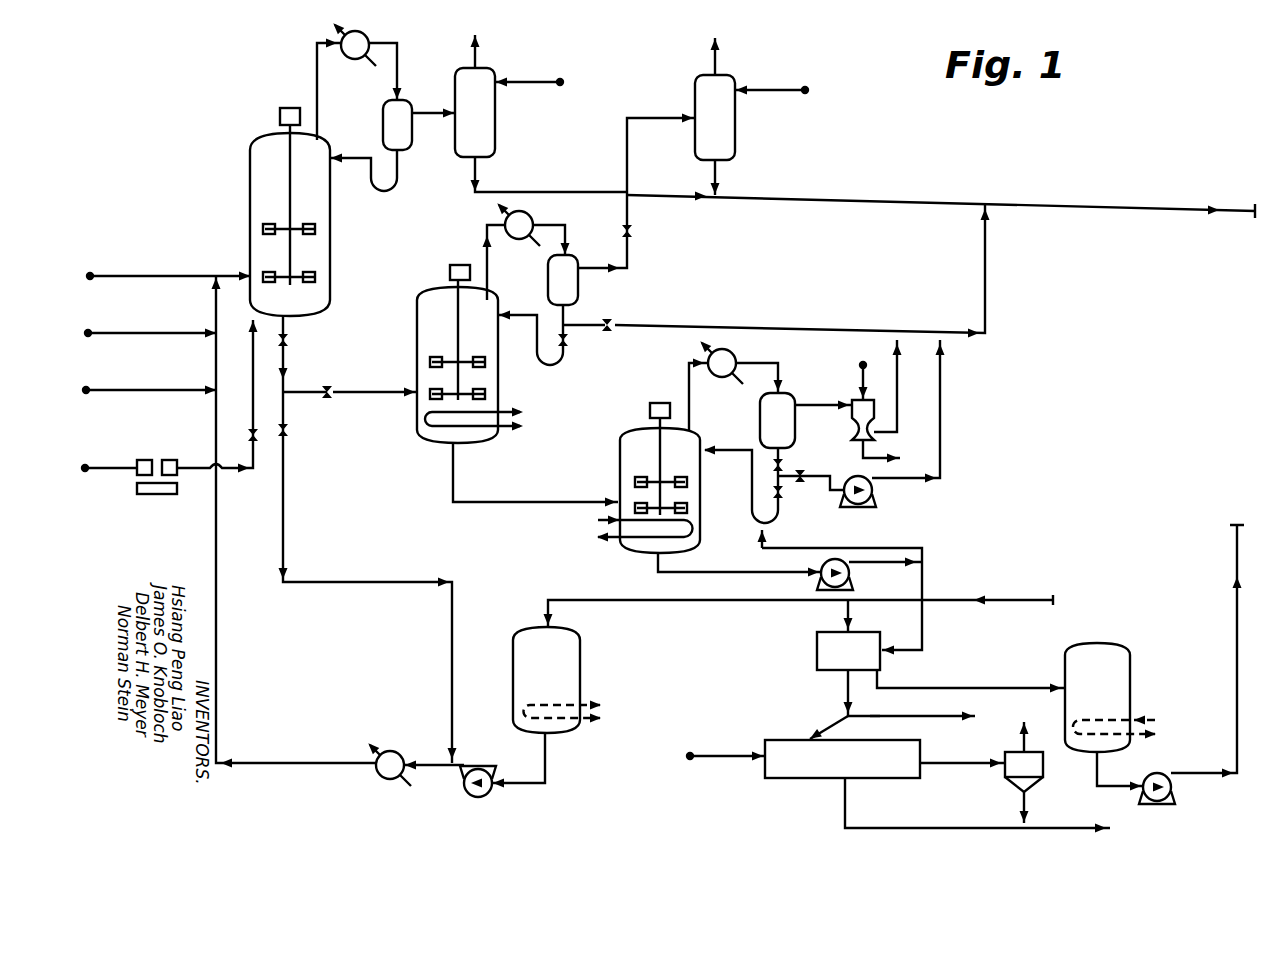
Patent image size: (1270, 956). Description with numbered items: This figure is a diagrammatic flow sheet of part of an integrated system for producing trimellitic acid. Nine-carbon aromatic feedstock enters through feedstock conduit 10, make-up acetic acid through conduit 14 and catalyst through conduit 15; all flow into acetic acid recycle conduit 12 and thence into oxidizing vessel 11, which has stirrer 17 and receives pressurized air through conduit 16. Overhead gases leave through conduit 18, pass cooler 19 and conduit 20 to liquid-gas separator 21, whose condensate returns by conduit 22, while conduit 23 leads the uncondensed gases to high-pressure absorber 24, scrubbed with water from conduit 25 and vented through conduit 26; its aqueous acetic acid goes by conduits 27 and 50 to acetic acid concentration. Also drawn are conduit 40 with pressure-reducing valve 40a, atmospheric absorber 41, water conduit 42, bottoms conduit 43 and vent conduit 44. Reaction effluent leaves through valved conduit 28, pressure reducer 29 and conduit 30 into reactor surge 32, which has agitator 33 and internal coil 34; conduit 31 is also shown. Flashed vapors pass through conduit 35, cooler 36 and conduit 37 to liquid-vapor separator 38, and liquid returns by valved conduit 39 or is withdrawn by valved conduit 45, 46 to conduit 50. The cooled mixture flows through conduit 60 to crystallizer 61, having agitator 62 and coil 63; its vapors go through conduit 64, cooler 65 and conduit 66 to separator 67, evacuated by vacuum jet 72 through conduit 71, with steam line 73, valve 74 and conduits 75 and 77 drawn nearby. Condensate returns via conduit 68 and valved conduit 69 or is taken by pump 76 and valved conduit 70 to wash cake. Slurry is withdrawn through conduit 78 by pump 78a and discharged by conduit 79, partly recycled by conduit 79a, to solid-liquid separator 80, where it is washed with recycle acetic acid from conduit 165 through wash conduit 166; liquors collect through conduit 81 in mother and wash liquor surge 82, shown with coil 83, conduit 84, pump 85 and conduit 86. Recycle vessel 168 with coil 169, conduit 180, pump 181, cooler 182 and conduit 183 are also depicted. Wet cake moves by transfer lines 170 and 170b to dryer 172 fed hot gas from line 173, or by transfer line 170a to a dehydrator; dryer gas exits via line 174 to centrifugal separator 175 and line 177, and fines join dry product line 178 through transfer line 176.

The feedstock conduit 10 is at (218, 246).
The oxidizing vessel 11 is at (250, 162).
The acetic acid recycle conduit 12 is at (216, 300).
The conduit 14 is at (182, 348).
The catalyst feed line 15 is at (180, 405).
The conduit 16 is at (246, 362).
The stirrer 17 is at (263, 225).
The conduit 18 is at (317, 76).
The cooler 19 is at (366, 33).
The conduit 20 is at (397, 75).
The liquid-gas separator 21 is at (383, 118).
The conduit 22 is at (350, 160).
The gas line to absorber 23 is at (428, 108).
The high pressure absorber 24 is at (486, 104).
The water line 25 is at (540, 96).
The conduit 26 is at (496, 52).
The conduit 27 is at (485, 183).
The valved conduit 28 is at (288, 348).
The pressure reducer 29 is at (338, 412).
The conduit 30 is at (380, 390).
The line 31 is at (288, 500).
The reactor surge 32 is at (417, 310).
The agitator 33 is at (430, 358).
The internal heat exchange coil 34 is at (488, 412).
The conduit 35 is at (482, 250).
The cooler 36 is at (530, 216).
The condensate line 37 is at (568, 240).
The liquid-vapor separator 38 is at (578, 285).
The valved conduit 39 is at (520, 315).
The gas line to atmospheric absorber 40 is at (640, 118).
The pressure reducing valve 40a is at (632, 230).
The atmospheric absorber 41 is at (727, 109).
The water line 42 is at (797, 103).
The absorber bottoms line 43 is at (718, 185).
The vent gas line 44 is at (738, 55).
The valved conduit 45 is at (605, 352).
The valved conduit 46 is at (716, 327).
The conduit 50 is at (840, 198).
The conduit 60 is at (453, 482).
The crystallizer 61 is at (576, 552).
The agitator 62 is at (687, 482).
The coil 63 is at (692, 530).
The conduit 64 is at (689, 382).
The cooler 65 is at (735, 355).
The conduit 66 is at (781, 376).
The liquid-gas separator 67 is at (760, 405).
The conduit 68 is at (783, 457).
The valved conduit 69 is at (733, 450).
The valved conduit 70 is at (783, 480).
The conduit 71 is at (822, 404).
The vacuum jet 72 is at (852, 430).
The steam line 73 is at (866, 390).
The valve 74 is at (805, 475).
The line 75 is at (899, 392).
The pump 76 is at (872, 492).
The line 77 is at (942, 422).
The conduit 78 is at (690, 572).
The pump 78a is at (820, 570).
The conduit 79 is at (893, 604).
The conduit 79a is at (895, 545).
The solid-liquid separator 80 is at (882, 662).
The conduit 81 is at (993, 687).
The mother and wash liquor surge 82 is at (1108, 684).
The heating coil 83 is at (1120, 710).
The line 84 is at (1099, 772).
The pump 85 is at (1166, 804).
The line 86 is at (1232, 733).
The conduit 165 is at (1020, 586).
The wash conduit 166 is at (852, 614).
The acetic acid recycle surge vessel 168 is at (565, 664).
The cooling coil 169 is at (572, 700).
The transfer line 170 is at (840, 690).
The transfer line 170a is at (870, 718).
The transfer line 170b is at (832, 732).
The dryer 172 is at (772, 740).
The line 173 is at (718, 758).
The line 174 is at (958, 765).
The centrifugal separator 175 is at (1043, 762).
The transfer line 176 is at (1026, 800).
The line 177 is at (1020, 740).
The line 178 is at (942, 805).
The line 180 is at (548, 766).
The pump 181 is at (492, 800).
The cooler 182 is at (400, 753).
The line 183 is at (430, 768).